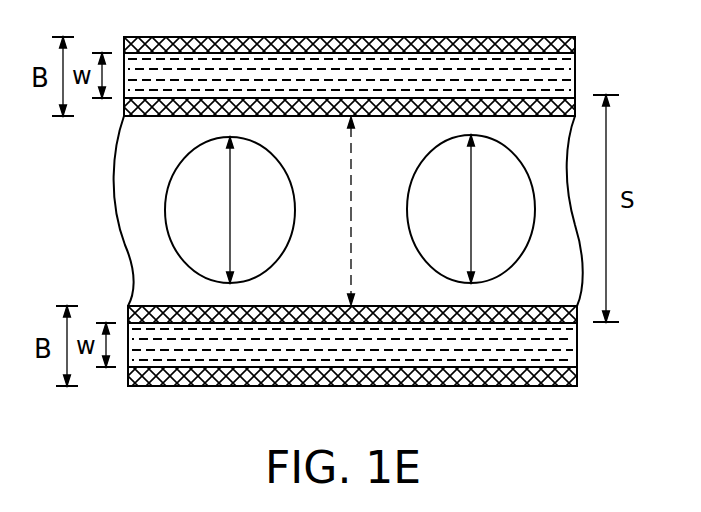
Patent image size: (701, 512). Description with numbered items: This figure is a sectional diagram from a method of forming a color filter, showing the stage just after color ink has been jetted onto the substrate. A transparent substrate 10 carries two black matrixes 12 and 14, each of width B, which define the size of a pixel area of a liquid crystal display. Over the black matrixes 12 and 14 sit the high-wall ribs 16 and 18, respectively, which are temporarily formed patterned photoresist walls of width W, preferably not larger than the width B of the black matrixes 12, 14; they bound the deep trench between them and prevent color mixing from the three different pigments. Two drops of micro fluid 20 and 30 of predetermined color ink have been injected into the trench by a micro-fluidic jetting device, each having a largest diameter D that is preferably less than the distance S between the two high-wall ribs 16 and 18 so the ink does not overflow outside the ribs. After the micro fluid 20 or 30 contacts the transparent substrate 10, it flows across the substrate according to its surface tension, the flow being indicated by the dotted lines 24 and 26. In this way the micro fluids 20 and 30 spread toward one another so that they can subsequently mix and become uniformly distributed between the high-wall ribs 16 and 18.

The transparent substrate 10 is at (168, 163).
The black matrix 12 is at (577, 41).
The black matrix 14 is at (578, 372).
The high-wall rib 16 is at (578, 343).
The high-wall rib 18 is at (577, 72).
The micro fluid 20 is at (212, 195).
The dotted line 24 is at (375, 164).
The dotted line 26 is at (332, 258).
The micro fluid 30 is at (452, 195).